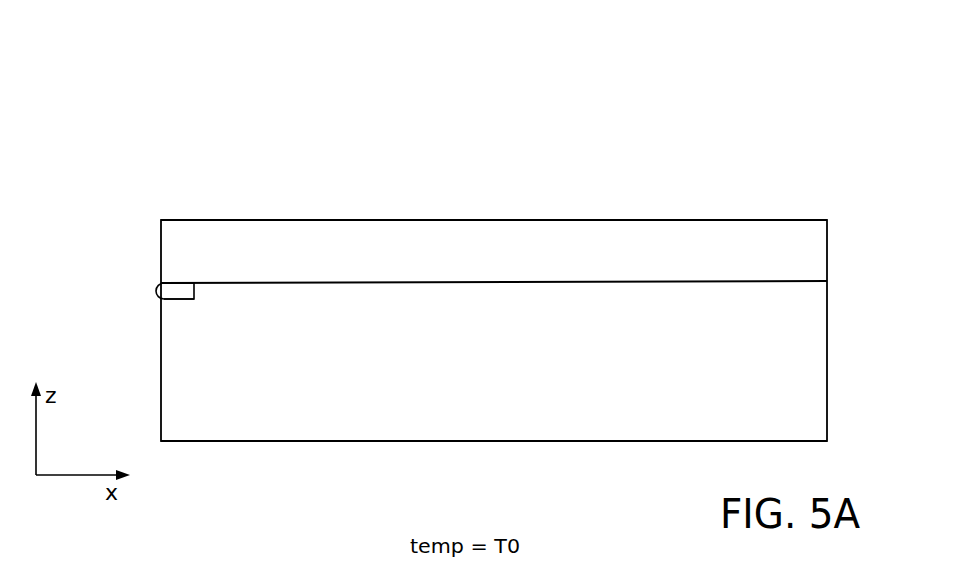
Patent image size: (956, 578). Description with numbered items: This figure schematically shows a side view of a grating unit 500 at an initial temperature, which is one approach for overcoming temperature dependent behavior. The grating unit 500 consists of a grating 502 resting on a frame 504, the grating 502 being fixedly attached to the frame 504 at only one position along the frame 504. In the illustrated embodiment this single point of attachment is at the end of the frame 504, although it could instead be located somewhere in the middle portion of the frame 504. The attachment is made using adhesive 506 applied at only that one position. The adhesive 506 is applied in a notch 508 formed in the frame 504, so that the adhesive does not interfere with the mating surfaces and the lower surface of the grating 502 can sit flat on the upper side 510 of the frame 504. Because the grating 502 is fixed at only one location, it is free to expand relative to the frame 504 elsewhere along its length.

The grating unit 500 is at (170, 151).
The grating 502 is at (347, 221).
The frame 504 is at (473, 441).
The adhesive 506 is at (157, 295).
The notch 508 is at (178, 300).
The upper side 510 is at (647, 283).